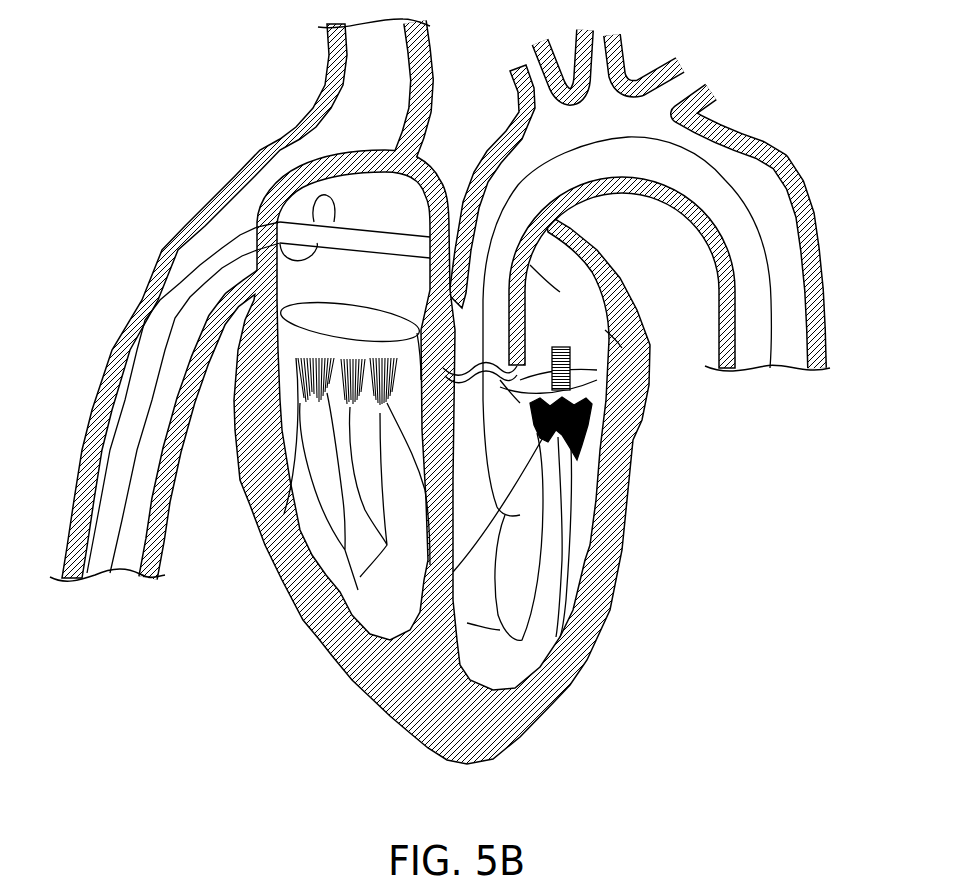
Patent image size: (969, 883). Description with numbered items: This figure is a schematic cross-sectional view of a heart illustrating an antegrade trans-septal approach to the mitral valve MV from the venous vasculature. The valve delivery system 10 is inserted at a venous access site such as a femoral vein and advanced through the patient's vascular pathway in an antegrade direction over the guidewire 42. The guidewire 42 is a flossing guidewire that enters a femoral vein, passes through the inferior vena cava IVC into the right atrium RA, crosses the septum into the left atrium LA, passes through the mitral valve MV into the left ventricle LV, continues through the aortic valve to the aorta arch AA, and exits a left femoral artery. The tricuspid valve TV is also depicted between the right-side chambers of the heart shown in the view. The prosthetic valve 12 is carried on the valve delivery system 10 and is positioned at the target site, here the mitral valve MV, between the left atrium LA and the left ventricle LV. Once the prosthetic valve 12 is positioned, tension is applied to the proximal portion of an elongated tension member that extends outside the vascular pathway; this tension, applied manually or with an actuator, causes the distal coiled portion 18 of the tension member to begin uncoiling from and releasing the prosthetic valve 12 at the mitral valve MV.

The right atrium RA is at (350, 190).
The tricuspid valve TV is at (310, 320).
The inferior vena cava IVC is at (127, 512).
The valve delivery system 10 is at (113, 540).
The aorta arch AA is at (545, 125).
The guidewire 42 is at (750, 203).
The left atrium LA is at (547, 257).
The prosthetic valve 12 is at (617, 337).
The distal coiled portion 18 is at (610, 357).
The mitral valve MV is at (597, 387).
The left ventricle LV is at (577, 517).